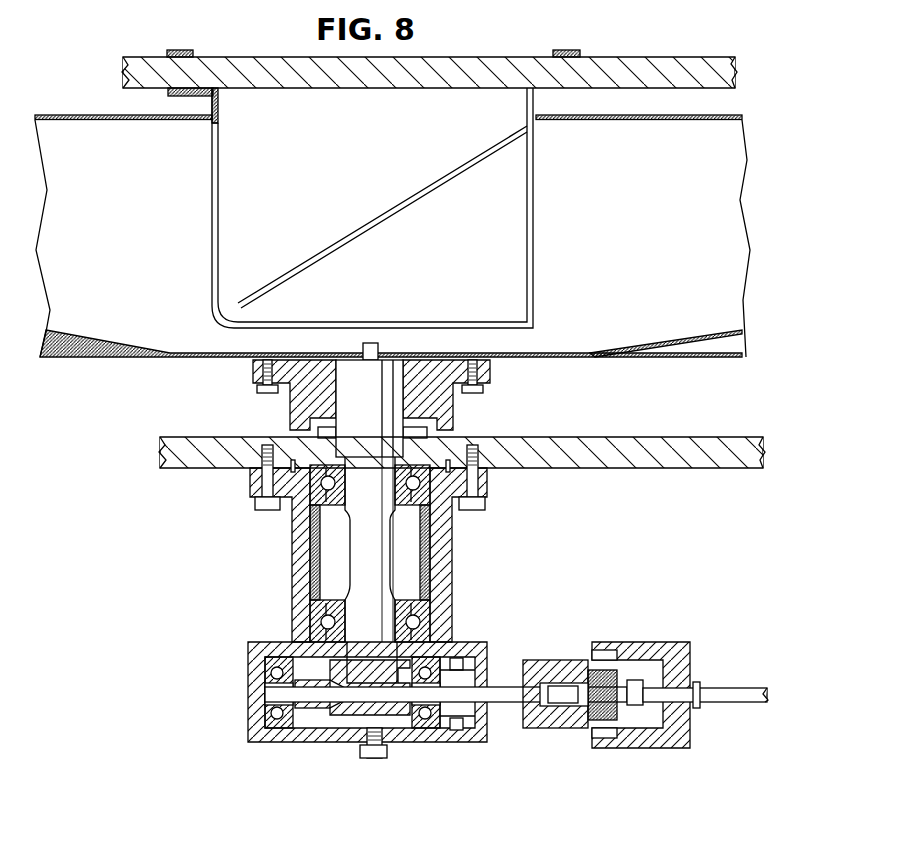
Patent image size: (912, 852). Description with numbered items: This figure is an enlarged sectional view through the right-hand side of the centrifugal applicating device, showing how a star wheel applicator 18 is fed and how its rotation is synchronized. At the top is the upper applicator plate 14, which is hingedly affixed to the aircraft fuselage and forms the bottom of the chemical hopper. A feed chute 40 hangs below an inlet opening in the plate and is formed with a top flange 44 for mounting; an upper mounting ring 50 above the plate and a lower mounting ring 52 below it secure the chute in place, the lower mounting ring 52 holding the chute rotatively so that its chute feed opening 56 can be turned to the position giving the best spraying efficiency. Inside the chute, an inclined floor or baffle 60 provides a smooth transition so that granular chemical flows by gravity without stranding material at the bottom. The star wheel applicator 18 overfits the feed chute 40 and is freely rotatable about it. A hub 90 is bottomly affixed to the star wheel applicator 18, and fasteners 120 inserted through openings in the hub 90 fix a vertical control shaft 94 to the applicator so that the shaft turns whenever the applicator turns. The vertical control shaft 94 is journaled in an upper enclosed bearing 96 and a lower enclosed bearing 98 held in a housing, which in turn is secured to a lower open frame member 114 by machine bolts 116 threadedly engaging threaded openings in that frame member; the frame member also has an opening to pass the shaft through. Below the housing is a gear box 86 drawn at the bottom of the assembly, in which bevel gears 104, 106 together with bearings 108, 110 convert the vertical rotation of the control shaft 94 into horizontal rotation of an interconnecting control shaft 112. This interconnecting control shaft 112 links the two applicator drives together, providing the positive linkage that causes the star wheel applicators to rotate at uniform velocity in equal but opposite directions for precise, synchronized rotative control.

The upper applicator plate 14 is at (625, 59).
The upper mounting ring 50 is at (192, 51).
The star wheel applicator 18 is at (103, 114).
The lower mounting ring 52 is at (168, 98).
The top flange 44 is at (200, 98).
The chute feed opening 56 is at (218, 158).
The feed chute 40 is at (354, 208).
The inclined floor or baffle 60 is at (418, 191).
The hub 90 is at (447, 397).
The fasteners 120 is at (473, 372).
The vertical control shaft 94 is at (395, 380).
The lower open frame member 114 is at (555, 465).
The upper enclosed bearing 96 is at (432, 500).
The lower enclosed bearing 98 is at (420, 620).
The machine bolts 116 is at (272, 512).
The gear box 86 is at (493, 750).
The bearing 108 is at (275, 728).
The bearing 110 is at (418, 728).
The bevel gear 104 is at (355, 676).
The bevel gear 106 is at (307, 708).
The interconnecting control shaft 112 is at (720, 700).